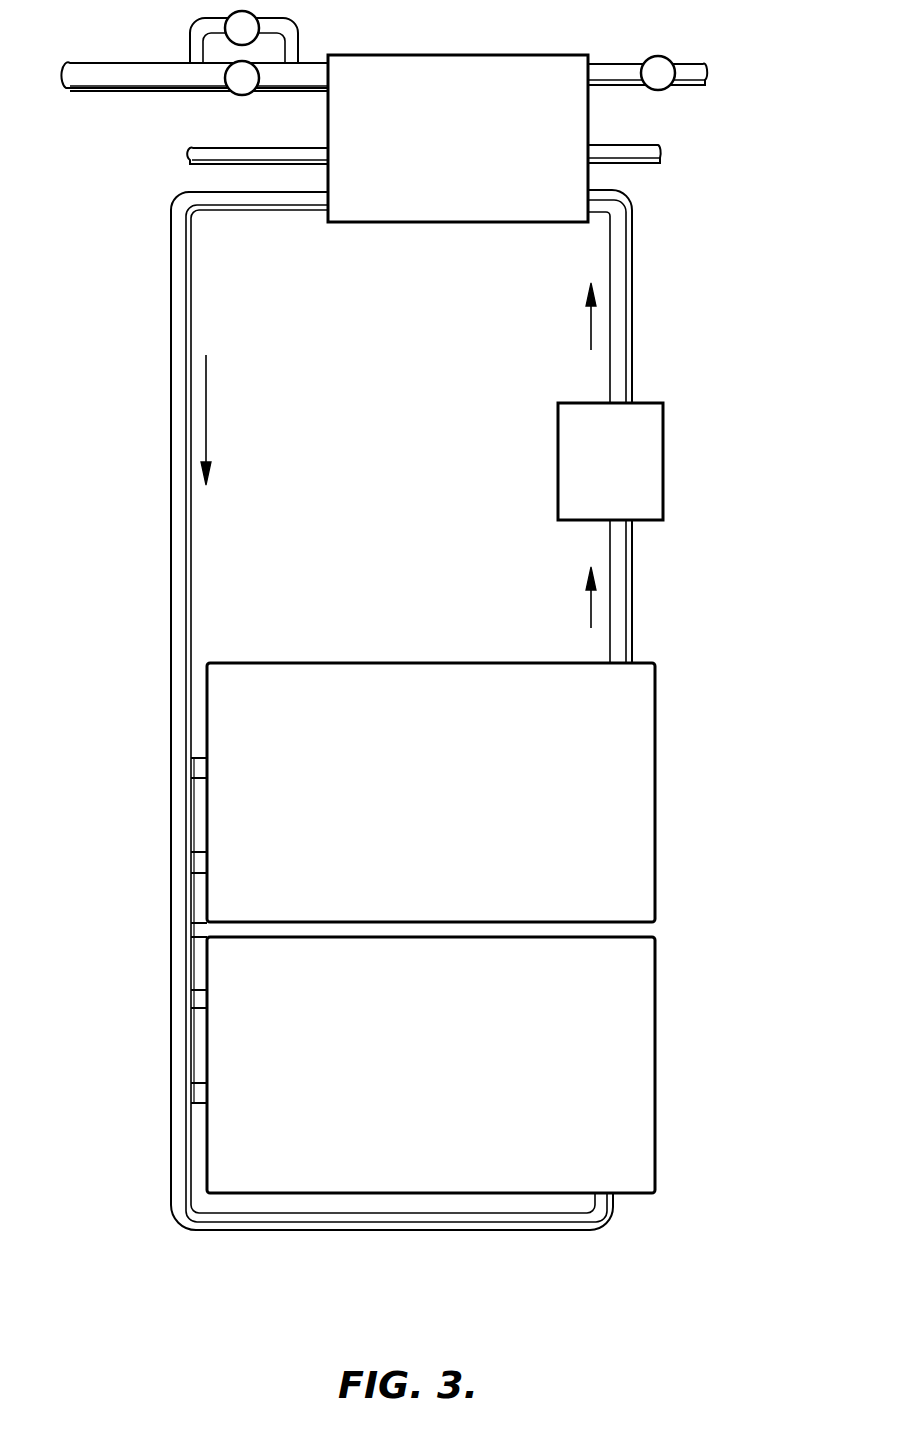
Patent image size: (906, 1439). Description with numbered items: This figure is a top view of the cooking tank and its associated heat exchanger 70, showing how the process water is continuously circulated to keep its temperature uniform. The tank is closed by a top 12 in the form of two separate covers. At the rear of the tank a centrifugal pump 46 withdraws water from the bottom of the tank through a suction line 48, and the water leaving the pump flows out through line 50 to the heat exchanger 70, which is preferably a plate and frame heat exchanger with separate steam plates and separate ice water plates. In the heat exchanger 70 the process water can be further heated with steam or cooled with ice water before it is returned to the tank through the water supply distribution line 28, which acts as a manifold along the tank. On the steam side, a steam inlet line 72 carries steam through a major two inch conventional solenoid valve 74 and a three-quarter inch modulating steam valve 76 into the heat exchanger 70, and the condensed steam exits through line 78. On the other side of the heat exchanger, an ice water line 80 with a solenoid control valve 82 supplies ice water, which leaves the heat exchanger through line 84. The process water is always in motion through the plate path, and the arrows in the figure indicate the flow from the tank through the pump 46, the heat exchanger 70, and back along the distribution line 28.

The top 12 is at (426, 816).
The water supply distribution line 28 is at (171, 508).
The centrifugal pump 46 is at (631, 474).
The suction line 48 is at (633, 603).
The line 50 is at (633, 232).
The heat exchanger 70 is at (474, 150).
The steam inlet line 72 is at (108, 93).
The solenoid valve 74 is at (243, 96).
The modulating steam valve 76 is at (259, 20).
The condensate line 78 is at (190, 157).
The ice water line 80 is at (706, 72).
The solenoid control valve 82 is at (645, 59).
The ice water outlet line 84 is at (660, 160).